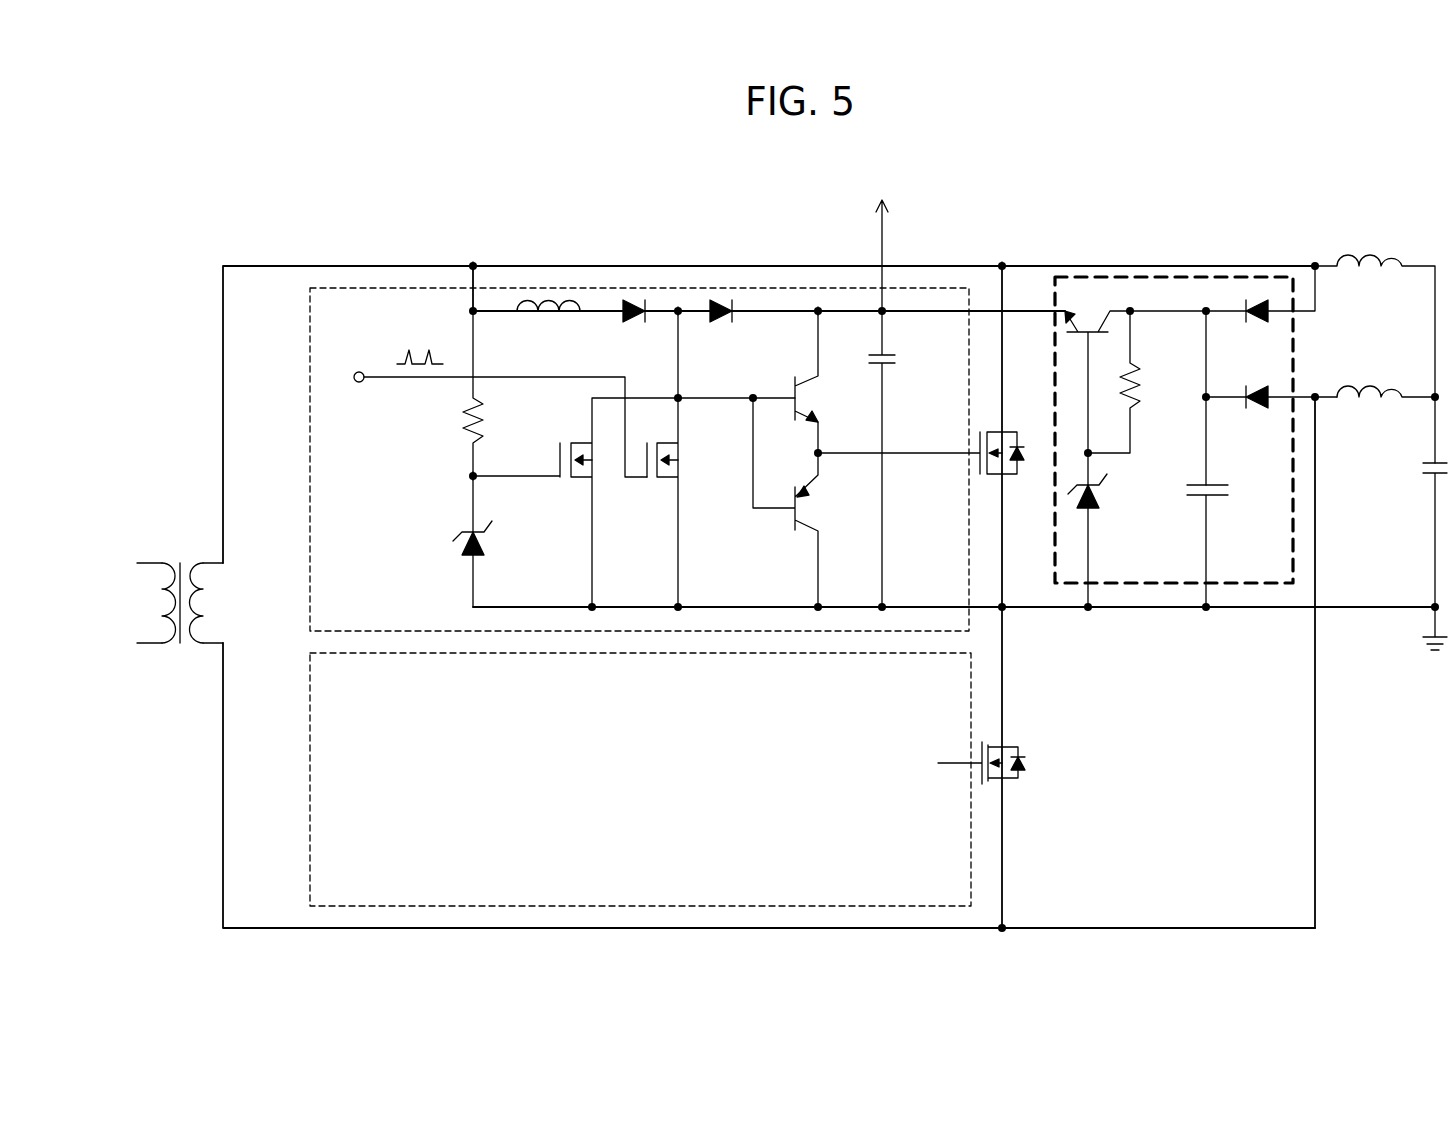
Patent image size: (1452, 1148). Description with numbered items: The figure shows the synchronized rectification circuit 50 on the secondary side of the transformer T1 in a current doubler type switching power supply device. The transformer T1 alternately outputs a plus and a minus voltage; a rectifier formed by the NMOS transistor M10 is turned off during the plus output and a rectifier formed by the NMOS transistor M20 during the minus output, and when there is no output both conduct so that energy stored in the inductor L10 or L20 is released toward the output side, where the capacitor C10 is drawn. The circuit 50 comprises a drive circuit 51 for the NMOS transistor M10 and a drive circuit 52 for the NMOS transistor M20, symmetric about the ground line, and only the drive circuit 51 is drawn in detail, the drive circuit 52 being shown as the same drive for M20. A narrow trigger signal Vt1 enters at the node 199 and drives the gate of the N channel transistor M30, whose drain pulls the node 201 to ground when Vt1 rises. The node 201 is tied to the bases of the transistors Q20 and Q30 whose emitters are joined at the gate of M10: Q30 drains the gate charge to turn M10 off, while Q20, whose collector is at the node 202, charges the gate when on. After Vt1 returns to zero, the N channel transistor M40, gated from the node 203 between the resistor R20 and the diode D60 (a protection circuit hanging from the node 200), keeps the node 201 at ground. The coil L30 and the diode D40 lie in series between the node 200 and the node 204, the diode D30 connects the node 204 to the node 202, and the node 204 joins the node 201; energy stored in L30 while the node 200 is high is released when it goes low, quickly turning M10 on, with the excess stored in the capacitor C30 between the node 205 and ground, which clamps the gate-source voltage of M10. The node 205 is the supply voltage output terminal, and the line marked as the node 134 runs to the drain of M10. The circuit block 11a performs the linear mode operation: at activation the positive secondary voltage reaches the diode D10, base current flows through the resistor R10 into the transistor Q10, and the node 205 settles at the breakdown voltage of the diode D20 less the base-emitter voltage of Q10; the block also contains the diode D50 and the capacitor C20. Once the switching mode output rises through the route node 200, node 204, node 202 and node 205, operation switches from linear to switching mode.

The synchronized rectification circuit 50 is at (292, 633).
The drive circuit 51 is at (310, 575).
The drive circuit 52 is at (310, 685).
The circuit block 11a is at (1176, 276).
The node 134 is at (1001, 264).
The node 199 is at (360, 383).
The node 200 is at (474, 264).
The node 201 is at (682, 402).
The node 202 is at (818, 306).
The node 203 is at (471, 478).
The node 204 is at (678, 306).
The node 205 is at (885, 306).
The transformer T1 is at (180, 585).
The trigger signal Vt1 is at (420, 341).
The resistor R20 is at (471, 428).
The diode D60 is at (464, 550).
The coil L30 is at (540, 318).
The diode D40 is at (633, 320).
The diode D30 is at (720, 320).
The capacitor C30 is at (897, 360).
The N channel transistor M40 is at (568, 443).
The N channel transistor M30 is at (680, 465).
The transistor Q20 is at (820, 402).
The transistor Q30 is at (820, 509).
The NMOS transistor M10 is at (1016, 432).
The NMOS transistor M20 is at (1012, 747).
The transistor Q10 is at (1080, 318).
The resistor R10 is at (1142, 385).
The diode D20 is at (1100, 500).
The diode D10 is at (1258, 320).
The diode D50 is at (1258, 406).
The capacitor C20 is at (1230, 490).
The inductor L10 is at (1368, 254).
The inductor L20 is at (1368, 384).
The output capacitor C10 is at (1423, 468).